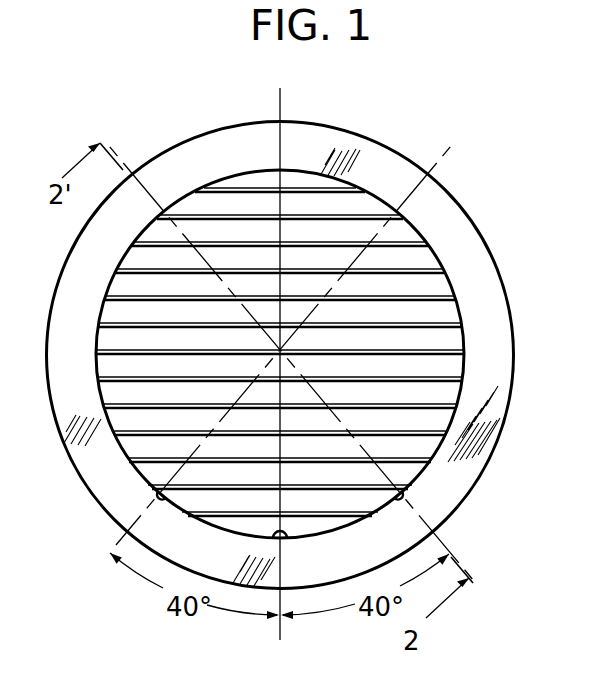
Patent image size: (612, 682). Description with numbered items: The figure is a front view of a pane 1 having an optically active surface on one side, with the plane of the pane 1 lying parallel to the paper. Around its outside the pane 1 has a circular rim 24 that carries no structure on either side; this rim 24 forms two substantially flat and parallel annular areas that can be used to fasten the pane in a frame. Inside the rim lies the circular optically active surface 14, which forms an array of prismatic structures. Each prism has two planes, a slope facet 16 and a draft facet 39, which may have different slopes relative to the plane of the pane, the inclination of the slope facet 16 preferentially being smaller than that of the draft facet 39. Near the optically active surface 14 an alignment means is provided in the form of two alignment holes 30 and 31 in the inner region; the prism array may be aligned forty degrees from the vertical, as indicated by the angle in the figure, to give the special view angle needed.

The pane 1 is at (478, 224).
The optically active surface 14 is at (155, 290).
The slope facet 16 is at (433, 252).
The circular rim 24 is at (493, 290).
The alignment hole 30 is at (400, 495).
The alignment hole 31 is at (158, 490).
The draft facet 39 is at (455, 428).